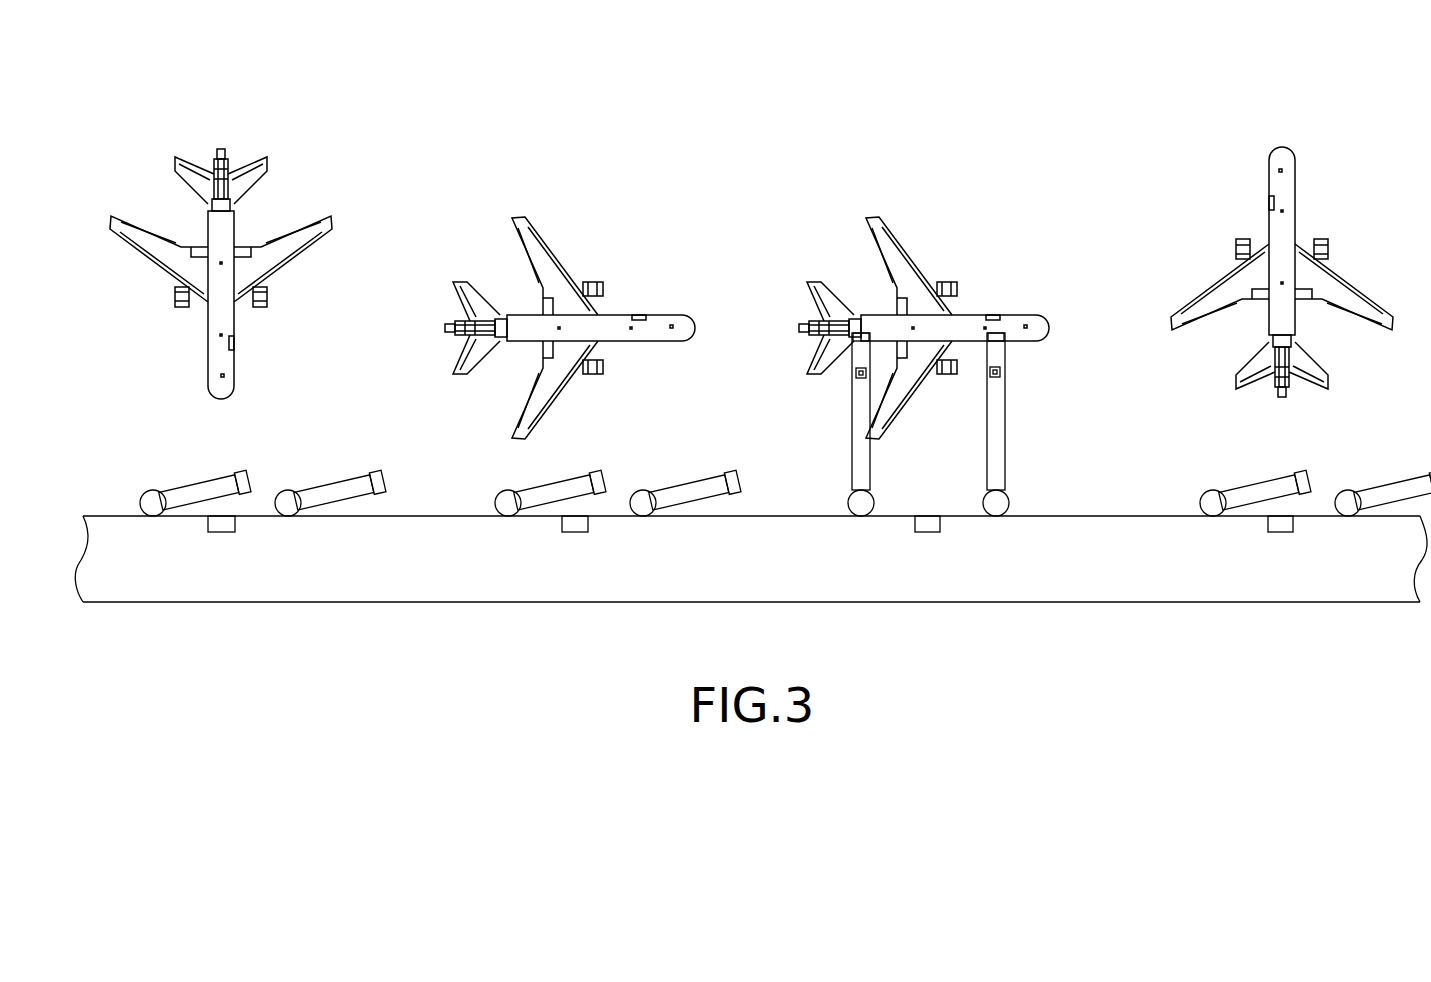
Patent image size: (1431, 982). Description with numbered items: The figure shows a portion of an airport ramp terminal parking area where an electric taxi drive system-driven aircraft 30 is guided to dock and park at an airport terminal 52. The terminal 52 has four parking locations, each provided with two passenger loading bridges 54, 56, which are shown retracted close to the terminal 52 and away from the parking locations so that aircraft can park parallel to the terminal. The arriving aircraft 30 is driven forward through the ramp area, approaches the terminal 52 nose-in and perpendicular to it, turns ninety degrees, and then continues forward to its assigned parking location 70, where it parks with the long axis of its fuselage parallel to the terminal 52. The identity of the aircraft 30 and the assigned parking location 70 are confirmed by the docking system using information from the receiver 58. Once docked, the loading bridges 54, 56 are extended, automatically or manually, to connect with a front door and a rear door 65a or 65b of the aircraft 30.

The electric taxi drive system-driven aircraft 30 is at (156, 214).
The airport terminal 52 is at (451, 602).
The passenger loading bridge 54 is at (848, 376).
The passenger loading bridge 56 is at (711, 371).
The receiver 58 is at (222, 532).
The rear door 65a is at (1038, 376).
The rear door 65b is at (823, 371).
The assigned parking location 70 is at (913, 566).